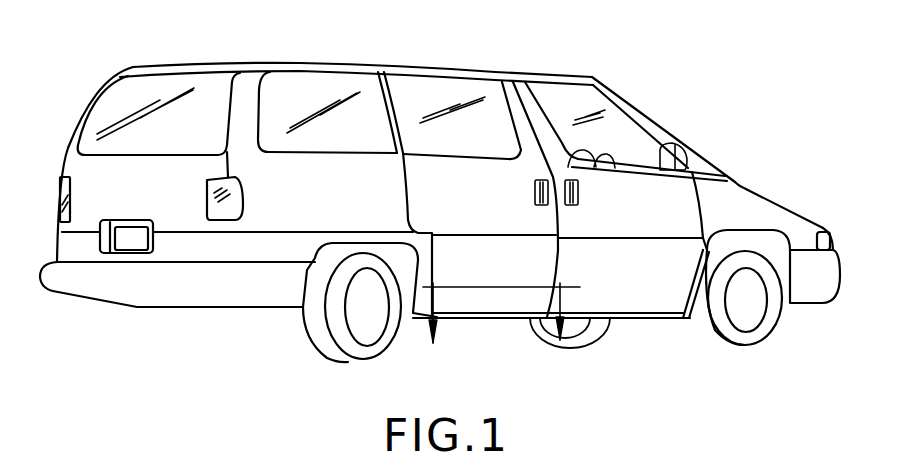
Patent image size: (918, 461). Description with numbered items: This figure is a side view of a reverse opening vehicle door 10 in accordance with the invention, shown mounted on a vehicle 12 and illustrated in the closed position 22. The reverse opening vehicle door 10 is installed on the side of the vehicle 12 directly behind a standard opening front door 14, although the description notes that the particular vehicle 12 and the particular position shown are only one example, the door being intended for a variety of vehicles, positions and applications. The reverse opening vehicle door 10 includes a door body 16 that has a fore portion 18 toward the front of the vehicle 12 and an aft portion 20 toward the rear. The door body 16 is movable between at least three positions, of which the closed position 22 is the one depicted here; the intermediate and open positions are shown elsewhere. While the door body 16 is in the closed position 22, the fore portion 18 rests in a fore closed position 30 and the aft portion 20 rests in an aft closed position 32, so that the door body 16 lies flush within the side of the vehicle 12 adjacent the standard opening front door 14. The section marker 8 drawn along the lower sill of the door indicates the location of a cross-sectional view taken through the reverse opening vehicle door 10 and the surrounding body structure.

The section line 8- 8 is at (494, 333).
The reverse opening vehicle door 10 is at (491, 320).
The vehicle 12 is at (762, 195).
The standard opening front door 14 is at (655, 305).
The door body 16 is at (550, 262).
The fore portion 18 is at (558, 220).
The aft portion 20 is at (403, 192).
The closed position 22 is at (509, 62).
The fore closed position 30 is at (576, 306).
The aft closed position 32 is at (420, 280).